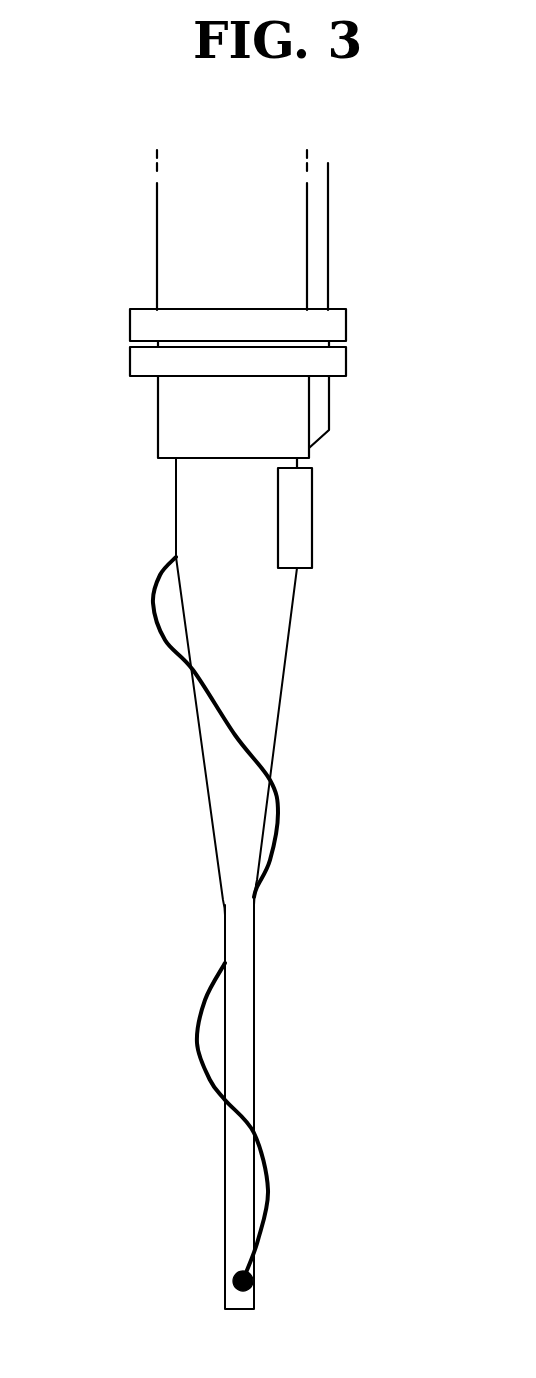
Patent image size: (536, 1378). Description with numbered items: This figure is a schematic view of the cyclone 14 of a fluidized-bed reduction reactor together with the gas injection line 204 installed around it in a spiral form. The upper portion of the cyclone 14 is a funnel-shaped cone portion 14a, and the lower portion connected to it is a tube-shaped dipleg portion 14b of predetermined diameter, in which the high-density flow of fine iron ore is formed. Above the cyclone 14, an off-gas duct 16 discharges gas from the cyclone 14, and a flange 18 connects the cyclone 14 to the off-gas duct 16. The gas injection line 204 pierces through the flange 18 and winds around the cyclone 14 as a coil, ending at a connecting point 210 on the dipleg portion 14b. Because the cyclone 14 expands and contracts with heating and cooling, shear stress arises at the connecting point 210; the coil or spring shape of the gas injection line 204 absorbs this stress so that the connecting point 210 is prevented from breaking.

The cyclone 14 is at (304, 883).
The cone portion 14a is at (283, 653).
The dipleg portion 14b is at (253, 1035).
The off-gas duct 16 is at (160, 234).
The flange 18 is at (132, 358).
The gas injection line 204 is at (152, 602).
The connecting point 210 is at (255, 1280).